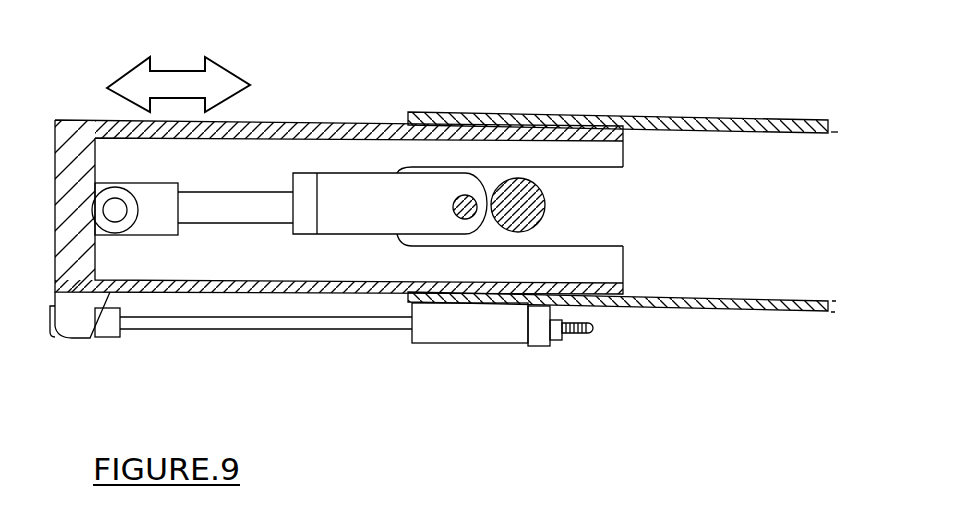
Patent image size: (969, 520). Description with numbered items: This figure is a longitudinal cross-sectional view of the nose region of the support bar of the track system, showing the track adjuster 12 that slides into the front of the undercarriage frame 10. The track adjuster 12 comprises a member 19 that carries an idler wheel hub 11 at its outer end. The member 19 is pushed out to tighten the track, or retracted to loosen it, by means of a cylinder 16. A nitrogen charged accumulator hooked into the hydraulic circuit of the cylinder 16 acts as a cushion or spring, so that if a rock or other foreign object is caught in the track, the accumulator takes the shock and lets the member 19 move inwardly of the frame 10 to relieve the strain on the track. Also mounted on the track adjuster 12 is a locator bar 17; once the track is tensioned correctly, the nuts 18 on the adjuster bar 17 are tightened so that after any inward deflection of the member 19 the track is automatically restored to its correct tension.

The undercarriage frame 10 is at (713, 114).
The idler wheel hub 11 is at (112, 209).
The track adjuster 12 is at (617, 173).
The cylinder 16 is at (342, 187).
The locator bar 17 is at (298, 322).
The nuts 18 is at (560, 338).
The member 19 is at (264, 122).